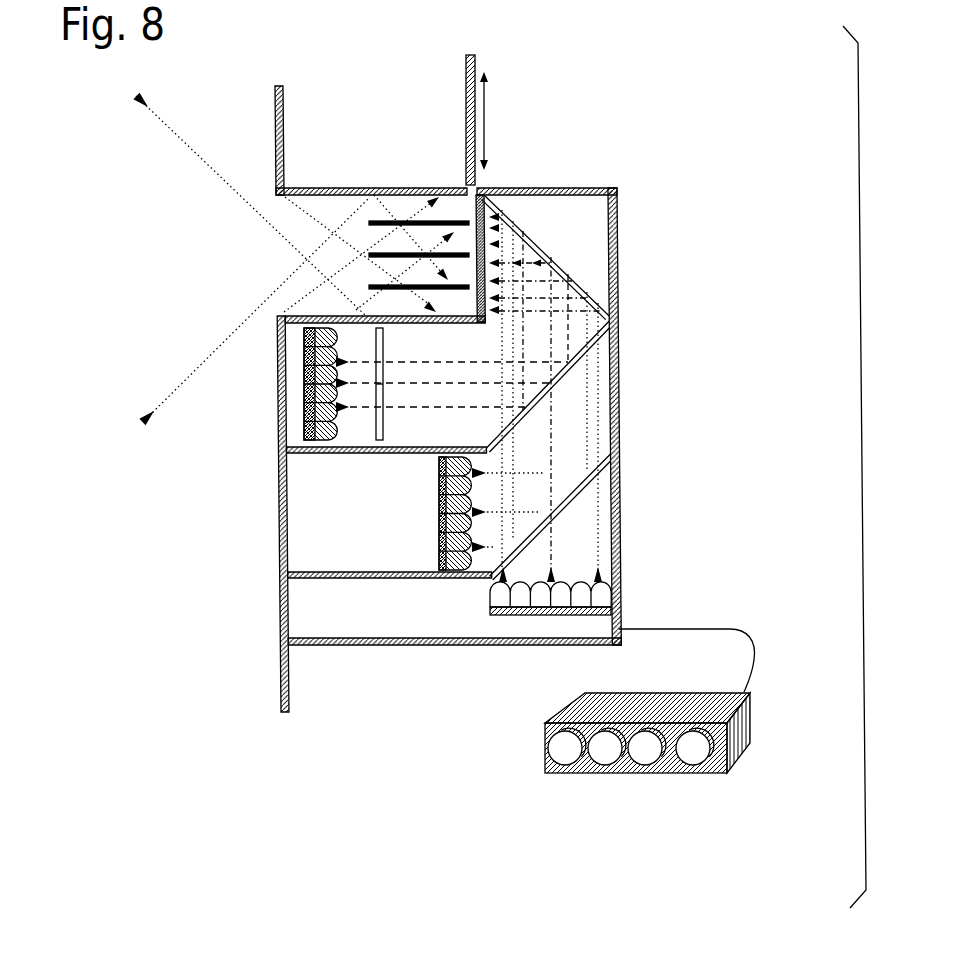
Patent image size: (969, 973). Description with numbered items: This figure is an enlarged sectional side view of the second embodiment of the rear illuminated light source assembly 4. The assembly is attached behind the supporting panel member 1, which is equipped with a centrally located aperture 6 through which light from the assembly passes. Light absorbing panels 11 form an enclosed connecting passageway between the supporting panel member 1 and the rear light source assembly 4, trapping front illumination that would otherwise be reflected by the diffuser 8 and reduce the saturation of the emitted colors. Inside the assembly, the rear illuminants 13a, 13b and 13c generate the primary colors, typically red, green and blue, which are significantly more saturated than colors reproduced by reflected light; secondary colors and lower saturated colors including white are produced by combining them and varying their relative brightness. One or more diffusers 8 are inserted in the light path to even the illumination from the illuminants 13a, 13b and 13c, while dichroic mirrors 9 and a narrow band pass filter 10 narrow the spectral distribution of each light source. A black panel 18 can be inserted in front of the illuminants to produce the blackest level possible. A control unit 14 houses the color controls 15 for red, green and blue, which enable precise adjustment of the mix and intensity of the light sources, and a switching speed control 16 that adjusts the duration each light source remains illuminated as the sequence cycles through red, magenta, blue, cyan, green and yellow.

The supporting panel member 1 is at (267, 170).
The rear illuminated light source assembly 4 is at (543, 187).
The aperture 6 is at (272, 254).
The diffuser 8 is at (472, 212).
The dichroic mirrors 9 is at (580, 463).
The narrow band pass filter 10 is at (388, 427).
The light absorbing panels 11 is at (403, 262).
The illuminant 13a is at (343, 425).
The illuminant 13b is at (481, 524).
The illuminant 13c is at (575, 578).
The control unit 14 is at (646, 773).
The color controls 15 is at (645, 776).
The switching speed control 16 is at (692, 776).
The black panel 18 is at (465, 122).